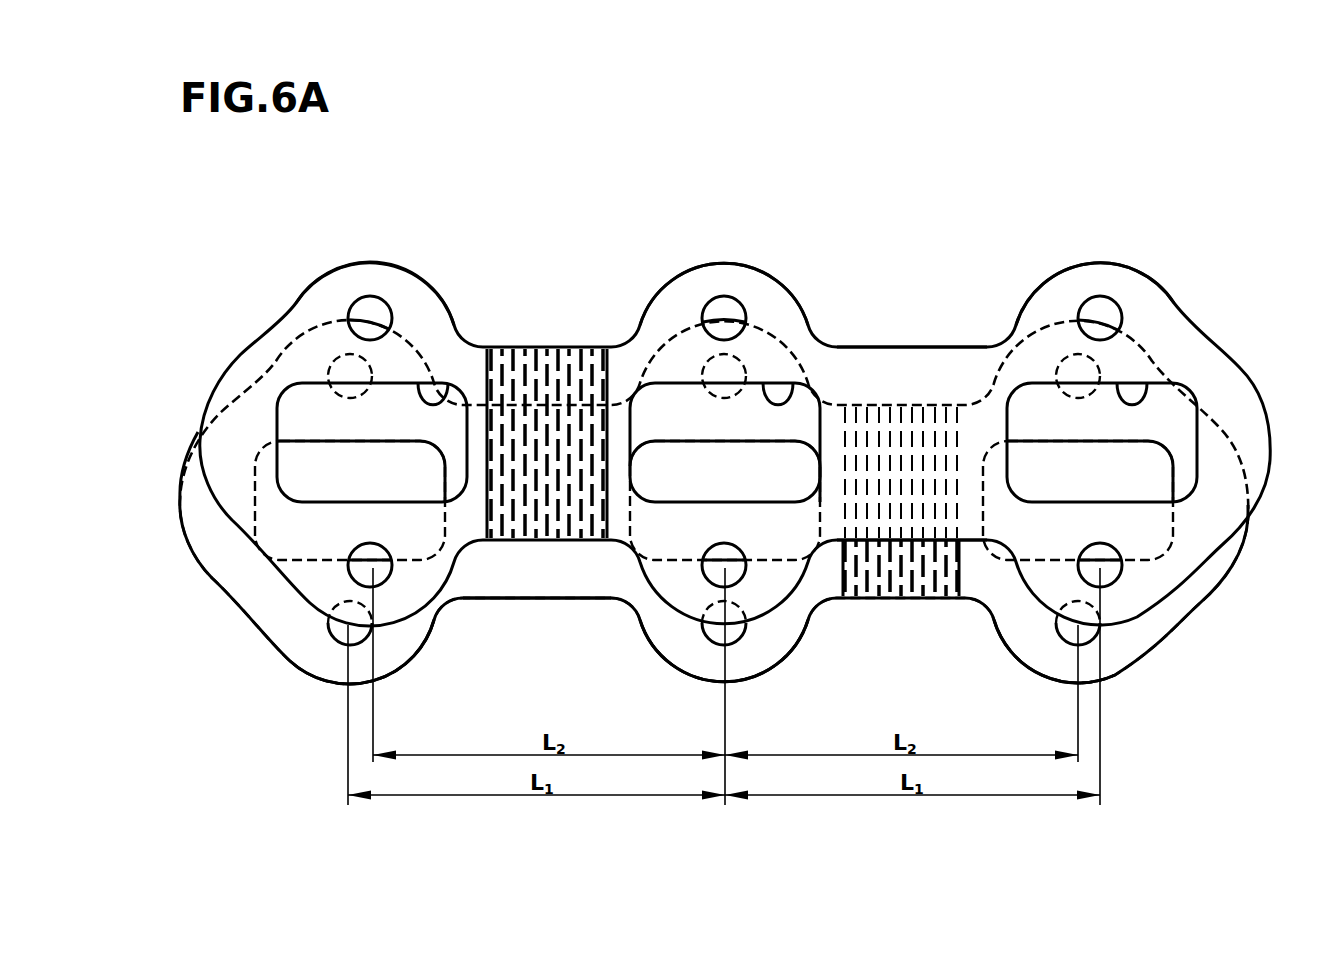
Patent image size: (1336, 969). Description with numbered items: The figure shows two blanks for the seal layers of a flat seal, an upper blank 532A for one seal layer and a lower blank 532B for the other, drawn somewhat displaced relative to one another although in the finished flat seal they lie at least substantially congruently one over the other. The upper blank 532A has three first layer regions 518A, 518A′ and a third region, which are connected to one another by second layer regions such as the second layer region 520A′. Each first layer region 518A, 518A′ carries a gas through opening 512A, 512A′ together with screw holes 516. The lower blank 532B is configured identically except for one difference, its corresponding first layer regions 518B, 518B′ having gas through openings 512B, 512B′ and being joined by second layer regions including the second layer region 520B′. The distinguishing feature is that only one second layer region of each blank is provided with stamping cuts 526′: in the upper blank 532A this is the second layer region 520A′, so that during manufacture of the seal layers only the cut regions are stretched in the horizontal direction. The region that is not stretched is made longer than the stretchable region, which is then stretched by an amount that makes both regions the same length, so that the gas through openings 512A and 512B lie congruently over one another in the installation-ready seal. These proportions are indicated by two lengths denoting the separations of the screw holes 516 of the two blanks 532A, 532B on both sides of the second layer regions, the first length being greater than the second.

The screw holes 516 is at (380, 297).
The first layer region 518A is at (412, 293).
The first layer region 518A′ is at (745, 283).
The first layer region 518B is at (308, 643).
The first layer region 518B′ is at (697, 663).
The gas through opening 512A is at (428, 388).
The gas through opening 512A′ is at (773, 388).
The gas through opening 512B is at (255, 512).
The gas through opening 512B′ is at (775, 560).
The second layer region 520A′ is at (550, 330).
The second layer region 520B′ is at (514, 609).
The stamping cuts 526′ is at (598, 362).
The upper blank 532A is at (236, 345).
The lower blank 532B is at (228, 607).